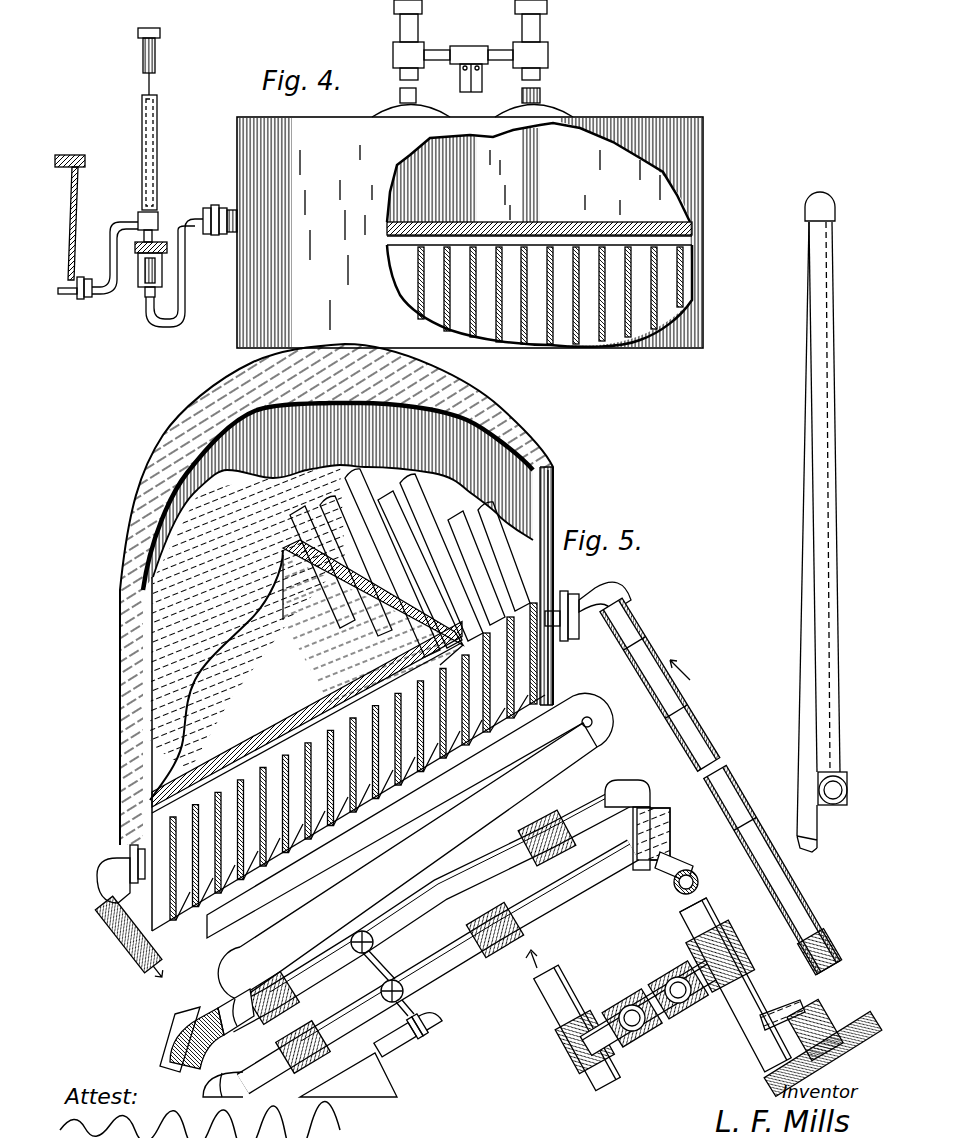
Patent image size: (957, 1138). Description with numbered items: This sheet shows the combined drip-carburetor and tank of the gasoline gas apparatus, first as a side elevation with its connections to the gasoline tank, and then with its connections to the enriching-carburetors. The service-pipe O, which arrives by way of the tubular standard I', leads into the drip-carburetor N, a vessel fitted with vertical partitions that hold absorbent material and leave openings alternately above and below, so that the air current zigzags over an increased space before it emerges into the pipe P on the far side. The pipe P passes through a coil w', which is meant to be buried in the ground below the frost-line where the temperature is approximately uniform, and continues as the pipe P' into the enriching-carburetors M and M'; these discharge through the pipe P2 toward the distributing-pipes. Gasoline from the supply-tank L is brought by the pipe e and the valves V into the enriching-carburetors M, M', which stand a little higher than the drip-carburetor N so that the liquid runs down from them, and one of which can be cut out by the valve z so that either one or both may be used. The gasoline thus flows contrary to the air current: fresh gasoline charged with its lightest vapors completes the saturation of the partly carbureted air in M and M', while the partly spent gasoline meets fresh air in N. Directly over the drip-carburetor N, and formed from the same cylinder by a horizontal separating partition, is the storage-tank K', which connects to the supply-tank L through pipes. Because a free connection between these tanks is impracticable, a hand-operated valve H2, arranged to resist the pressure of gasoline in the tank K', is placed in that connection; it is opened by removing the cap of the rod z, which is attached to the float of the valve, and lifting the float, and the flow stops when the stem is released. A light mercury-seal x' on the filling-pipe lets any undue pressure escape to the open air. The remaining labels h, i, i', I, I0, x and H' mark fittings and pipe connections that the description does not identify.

In FIG. 4, the rod z is at (143, 97).
In FIG. 5, the rod z is at (220, 1008).
In FIG. 4, the supply-tank L is at (70, 197).
In FIG. 4, the pipe h is at (98, 260).
In FIG. 4, the hand-operated valve H2 is at (138, 283).
In FIG. 4, the pipe i is at (409, 99).
In FIG. 4, the pipe i' is at (534, 99).
In FIG. 4, the mercury-seal x' is at (483, 78).
In FIG. 4, the storage-tank K' is at (539, 235).
In FIG. 5, the storage-tank K' is at (338, 667).
In FIG. 4, the drip-carburetor N is at (660, 262).
In FIG. 5, the drip-carburetor N is at (523, 667).
In FIG. 5, the coil w' is at (429, 846).
In FIG. 5, the enriching-carburetor M is at (428, 906).
In FIG. 5, the enriching-carburetor M' is at (418, 970).
In FIG. 5, the valves V is at (384, 986).
In FIG. 5, the pipe P is at (128, 914).
In FIG. 5, the pipe P' is at (176, 1039).
In FIG. 5, the pipe P2 is at (698, 880).
In FIG. 5, the pipe e is at (407, 1039).
In FIG. 5, the bracket I0 is at (348, 1075).
In FIG. 5, the pipe leg I is at (738, 985).
In FIG. 5, the tubular standard I' is at (576, 1022).
In FIG. 5, the cross pipe x is at (650, 1005).
In FIG. 5, the service-pipe O is at (747, 820).
In FIG. 5, the pipe coupling H' is at (823, 1047).